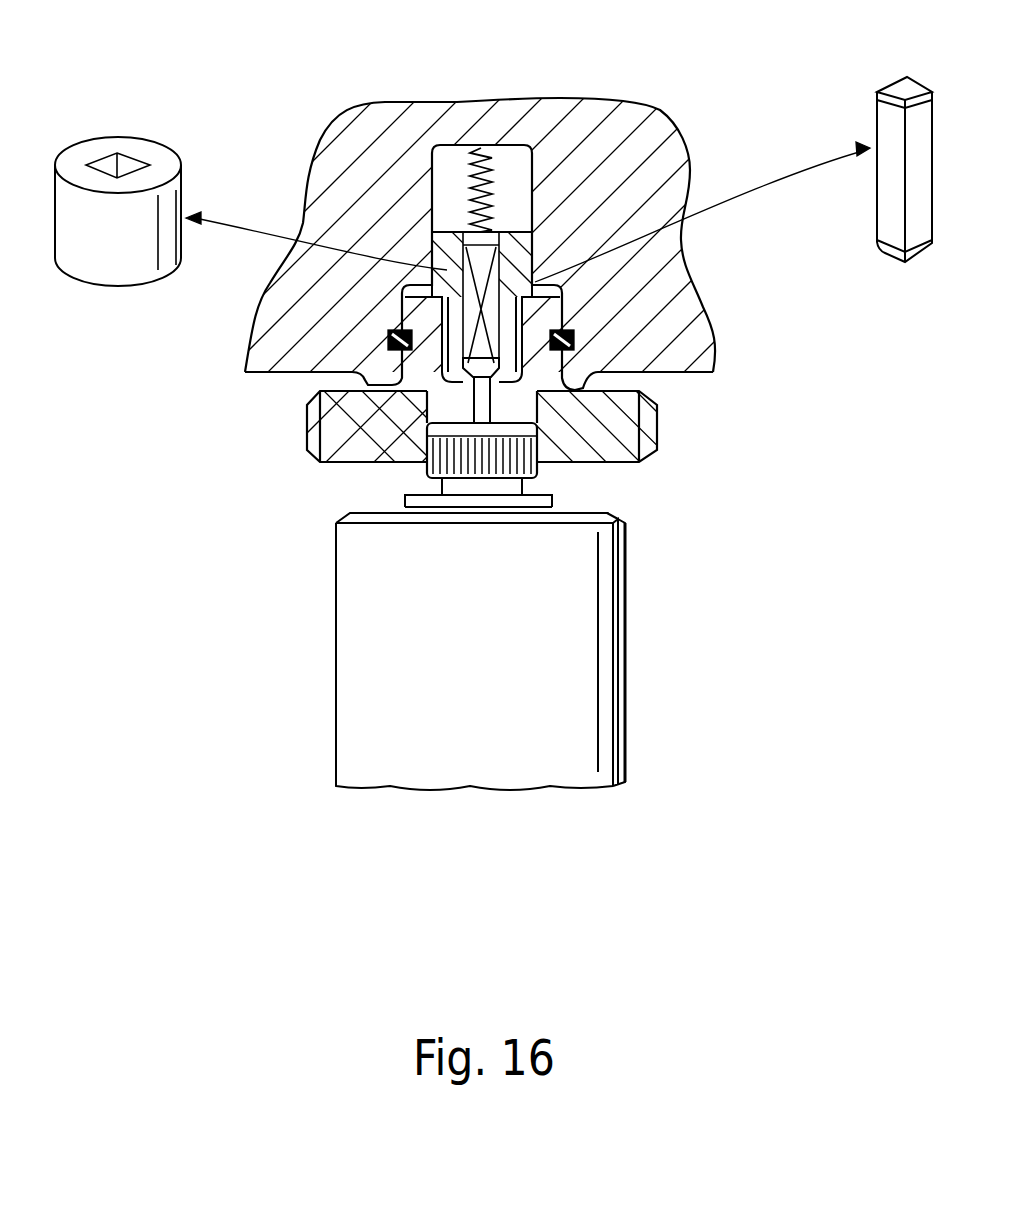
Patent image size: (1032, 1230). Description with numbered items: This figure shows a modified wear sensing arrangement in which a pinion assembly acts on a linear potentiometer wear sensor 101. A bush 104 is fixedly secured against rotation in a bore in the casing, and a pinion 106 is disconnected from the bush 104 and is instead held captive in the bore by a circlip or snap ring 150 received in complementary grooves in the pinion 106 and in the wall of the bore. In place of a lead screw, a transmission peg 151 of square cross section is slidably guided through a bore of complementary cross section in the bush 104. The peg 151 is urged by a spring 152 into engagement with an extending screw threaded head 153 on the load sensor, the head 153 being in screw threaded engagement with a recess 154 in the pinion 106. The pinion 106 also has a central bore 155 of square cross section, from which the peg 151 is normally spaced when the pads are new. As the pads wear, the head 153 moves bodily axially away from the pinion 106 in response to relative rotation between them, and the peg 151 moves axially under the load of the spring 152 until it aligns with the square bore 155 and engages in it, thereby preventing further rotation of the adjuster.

The linear potentiometer wear sensor 101 is at (545, 675).
The bush 104 is at (120, 263).
The pinion 106 is at (618, 425).
The circlip or snap ring 150 is at (388, 346).
The transmission peg 151 is at (483, 250).
The spring 152 is at (480, 150).
The screw threaded head 153 is at (503, 460).
The recess 154 is at (460, 440).
The central bore 155 is at (462, 395).